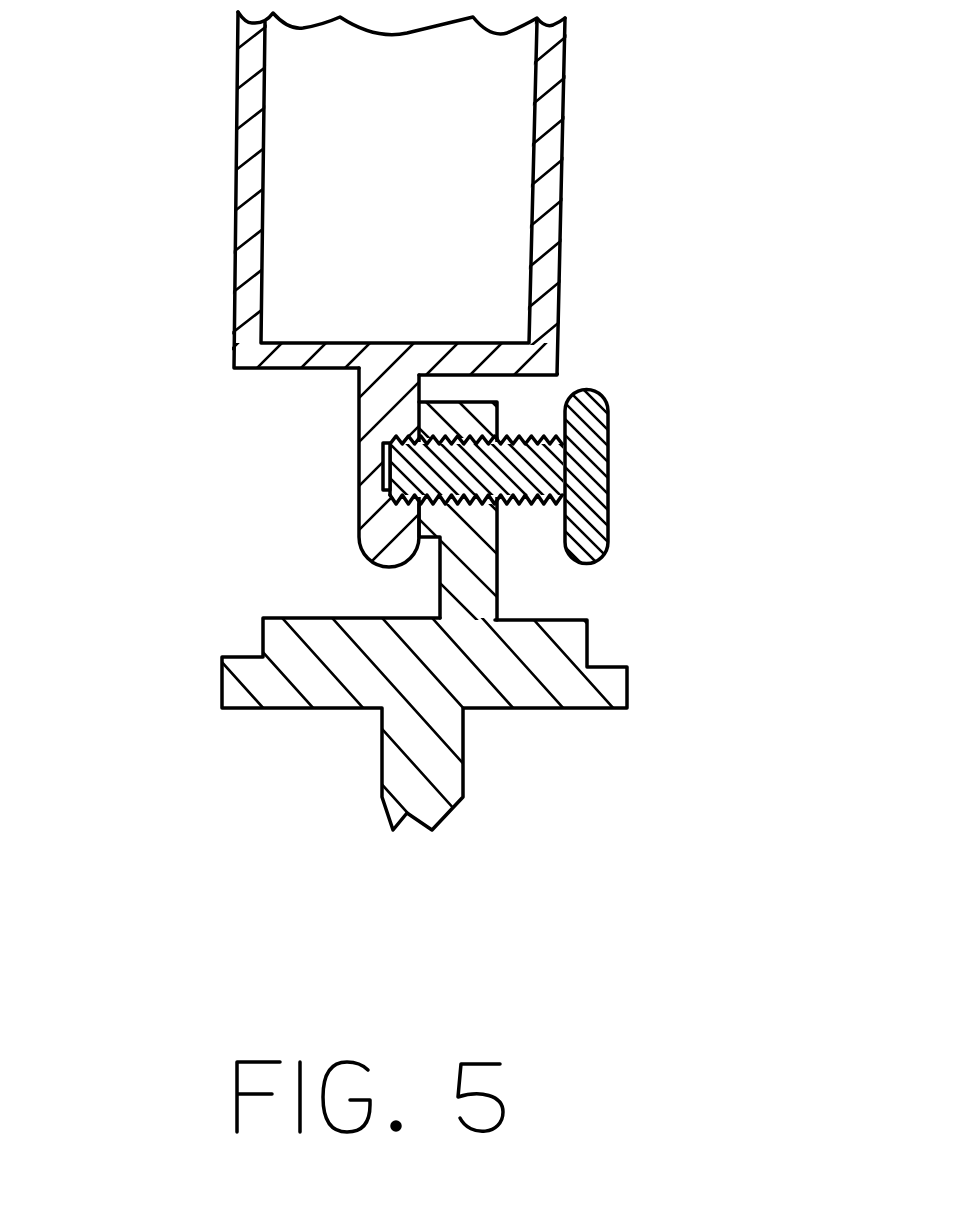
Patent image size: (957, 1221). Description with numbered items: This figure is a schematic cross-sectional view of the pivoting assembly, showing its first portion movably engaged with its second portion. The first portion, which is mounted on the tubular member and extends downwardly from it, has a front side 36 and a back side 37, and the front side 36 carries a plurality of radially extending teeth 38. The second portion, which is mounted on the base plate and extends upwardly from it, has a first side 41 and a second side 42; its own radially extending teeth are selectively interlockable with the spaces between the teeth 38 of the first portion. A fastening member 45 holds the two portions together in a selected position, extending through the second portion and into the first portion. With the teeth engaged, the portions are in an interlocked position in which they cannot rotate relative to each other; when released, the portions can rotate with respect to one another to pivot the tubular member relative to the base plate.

The front side 36 is at (420, 397).
The back side 37 is at (359, 497).
The radially extending teeth 38 is at (419, 407).
The first side 41 is at (437, 573).
The second side 42 is at (742, 683).
The fastening member 45 is at (612, 448).